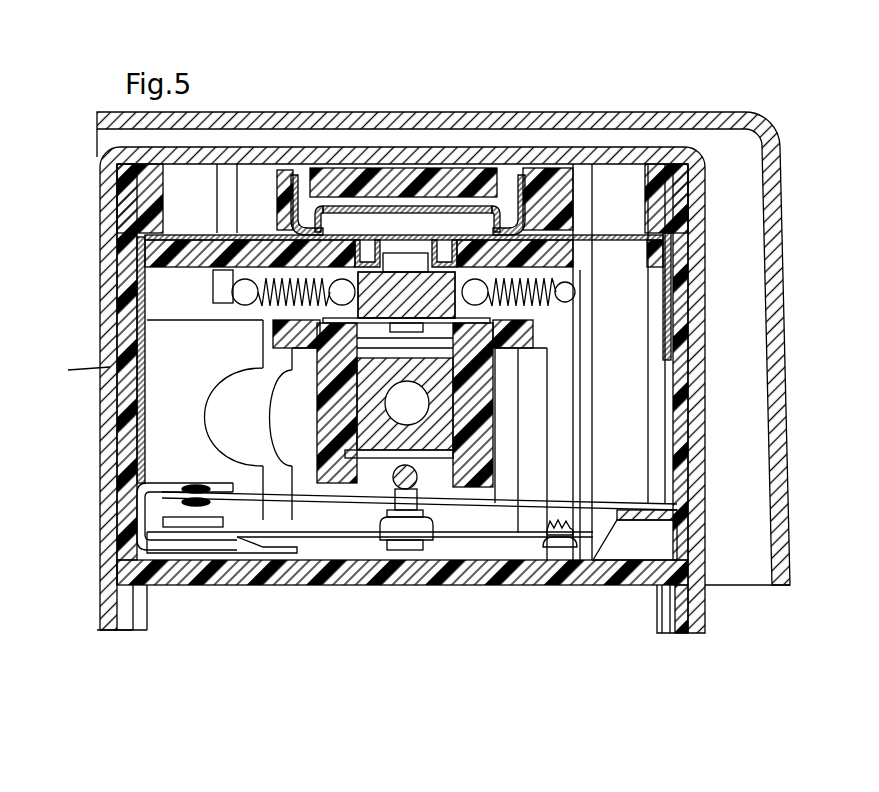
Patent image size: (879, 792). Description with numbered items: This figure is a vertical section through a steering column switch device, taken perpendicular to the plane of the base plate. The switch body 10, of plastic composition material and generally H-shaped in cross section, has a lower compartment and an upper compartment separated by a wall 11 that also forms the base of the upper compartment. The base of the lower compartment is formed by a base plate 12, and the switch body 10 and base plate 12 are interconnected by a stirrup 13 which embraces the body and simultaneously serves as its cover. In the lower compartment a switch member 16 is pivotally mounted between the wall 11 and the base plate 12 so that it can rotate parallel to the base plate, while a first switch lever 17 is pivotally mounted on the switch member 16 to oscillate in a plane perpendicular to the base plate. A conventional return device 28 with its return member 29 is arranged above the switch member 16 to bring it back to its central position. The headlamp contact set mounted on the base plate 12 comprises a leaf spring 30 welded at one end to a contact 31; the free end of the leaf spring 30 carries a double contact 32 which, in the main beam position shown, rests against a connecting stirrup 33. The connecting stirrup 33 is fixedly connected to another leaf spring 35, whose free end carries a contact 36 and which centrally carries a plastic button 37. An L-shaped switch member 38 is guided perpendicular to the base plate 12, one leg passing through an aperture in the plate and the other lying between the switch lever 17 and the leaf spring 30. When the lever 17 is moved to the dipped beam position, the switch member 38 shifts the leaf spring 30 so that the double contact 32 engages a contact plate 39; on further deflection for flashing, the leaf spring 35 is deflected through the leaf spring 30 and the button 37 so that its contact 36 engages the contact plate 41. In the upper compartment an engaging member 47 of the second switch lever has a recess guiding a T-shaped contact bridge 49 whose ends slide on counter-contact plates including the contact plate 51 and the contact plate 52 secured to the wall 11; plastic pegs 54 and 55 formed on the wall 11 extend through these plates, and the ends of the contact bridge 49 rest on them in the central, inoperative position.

The switch body 10 is at (143, 193).
The wall 11 is at (203, 257).
The base plate 12 is at (113, 560).
The stirrup 13 is at (95, 368).
The switch member 16 is at (333, 413).
The switch lever 17 is at (462, 428).
The return device 28 is at (400, 293).
The return member 29 is at (406, 295).
The leaf spring 30 is at (597, 508).
The contact 31 is at (640, 522).
The double contact 32 is at (213, 500).
The connecting stirrup 33 is at (270, 557).
The leaf spring 35 is at (338, 530).
The contact 36 is at (567, 547).
The button 37 is at (403, 547).
The switch member 38 is at (423, 480).
The contact plate 39 is at (180, 517).
The contact plate 41 is at (577, 580).
The engaging member 47 is at (342, 187).
The contact bridge 49 is at (313, 212).
The contact plate 51 is at (128, 247).
The contact plate 52 is at (700, 220).
The plastic peg 54 is at (322, 220).
The plastic peg 55 is at (503, 232).